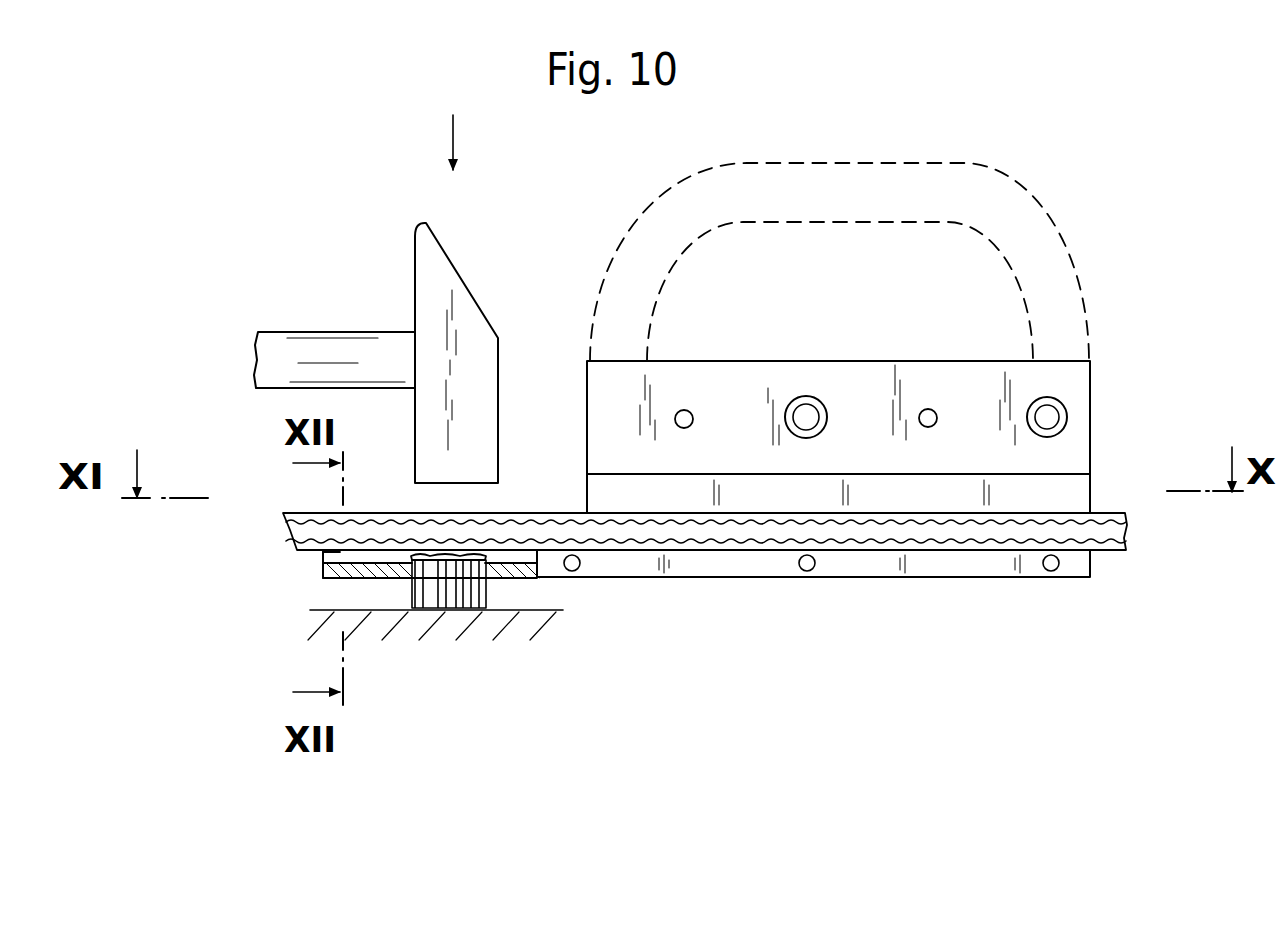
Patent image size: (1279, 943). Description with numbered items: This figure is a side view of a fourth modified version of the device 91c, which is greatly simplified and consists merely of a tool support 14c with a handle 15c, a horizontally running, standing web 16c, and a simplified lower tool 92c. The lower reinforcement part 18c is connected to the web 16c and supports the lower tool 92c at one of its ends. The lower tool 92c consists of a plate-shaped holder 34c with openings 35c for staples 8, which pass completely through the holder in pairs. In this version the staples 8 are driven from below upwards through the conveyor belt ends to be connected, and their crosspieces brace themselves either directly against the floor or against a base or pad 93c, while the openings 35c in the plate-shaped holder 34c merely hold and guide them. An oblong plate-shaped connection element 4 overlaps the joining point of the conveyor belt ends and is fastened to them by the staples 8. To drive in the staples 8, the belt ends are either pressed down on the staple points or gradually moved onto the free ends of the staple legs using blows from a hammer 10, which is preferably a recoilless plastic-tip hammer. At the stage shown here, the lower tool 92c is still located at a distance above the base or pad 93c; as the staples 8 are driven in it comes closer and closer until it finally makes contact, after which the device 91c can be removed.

The hammer 10 is at (305, 350).
The connection element 4 is at (430, 553).
The staple 8 is at (480, 606).
The tool support 14c is at (1093, 402).
The handle 15c is at (928, 183).
The web 16c is at (1078, 497).
The lower reinforcement part 18c is at (947, 570).
The plate-shaped holder 34c is at (545, 598).
The openings 35c is at (462, 612).
The device 91c is at (1138, 187).
The lower tool 92c is at (323, 572).
The base or pad 93c is at (312, 632).